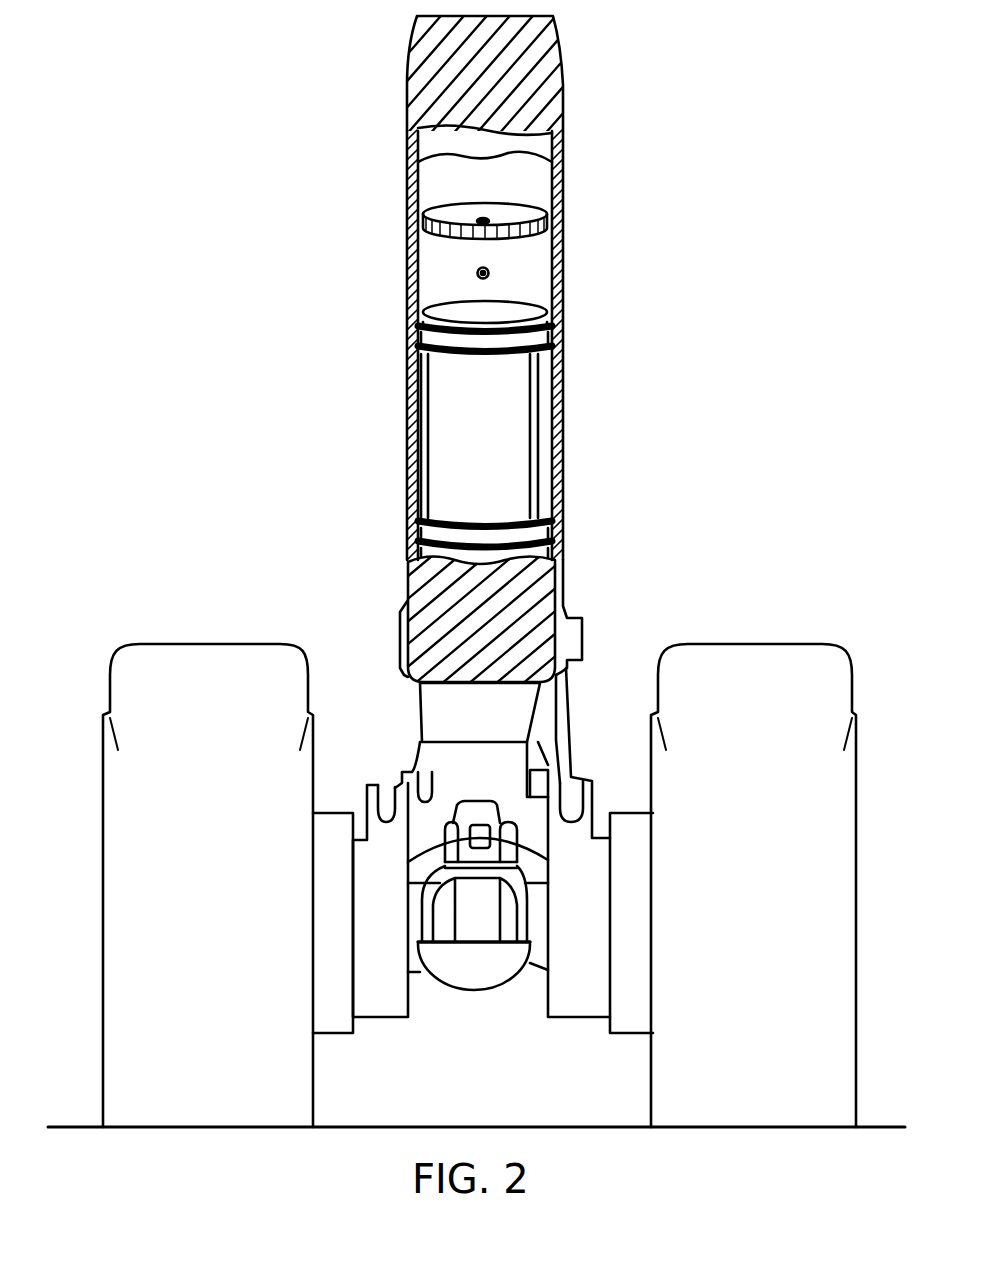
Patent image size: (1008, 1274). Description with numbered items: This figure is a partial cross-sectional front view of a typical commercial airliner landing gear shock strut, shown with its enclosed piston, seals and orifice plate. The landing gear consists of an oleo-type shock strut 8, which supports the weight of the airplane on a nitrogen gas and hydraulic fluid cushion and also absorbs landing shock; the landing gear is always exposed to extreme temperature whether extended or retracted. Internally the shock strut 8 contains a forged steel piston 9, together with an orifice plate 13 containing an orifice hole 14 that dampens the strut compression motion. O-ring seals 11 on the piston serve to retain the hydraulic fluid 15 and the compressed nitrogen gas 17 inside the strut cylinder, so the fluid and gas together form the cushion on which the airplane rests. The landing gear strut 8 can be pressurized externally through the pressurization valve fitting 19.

The oleo-type shock strut 8 is at (487, 602).
The forged steel piston 9 is at (495, 310).
The O-ring seals 11 is at (495, 363).
The orifice plate 13 is at (455, 212).
The orifice hole 14 is at (483, 220).
The hydraulic fluid 15 is at (428, 277).
The compressed nitrogen gas 17 is at (538, 152).
The pressurization valve fitting 19 is at (490, 272).